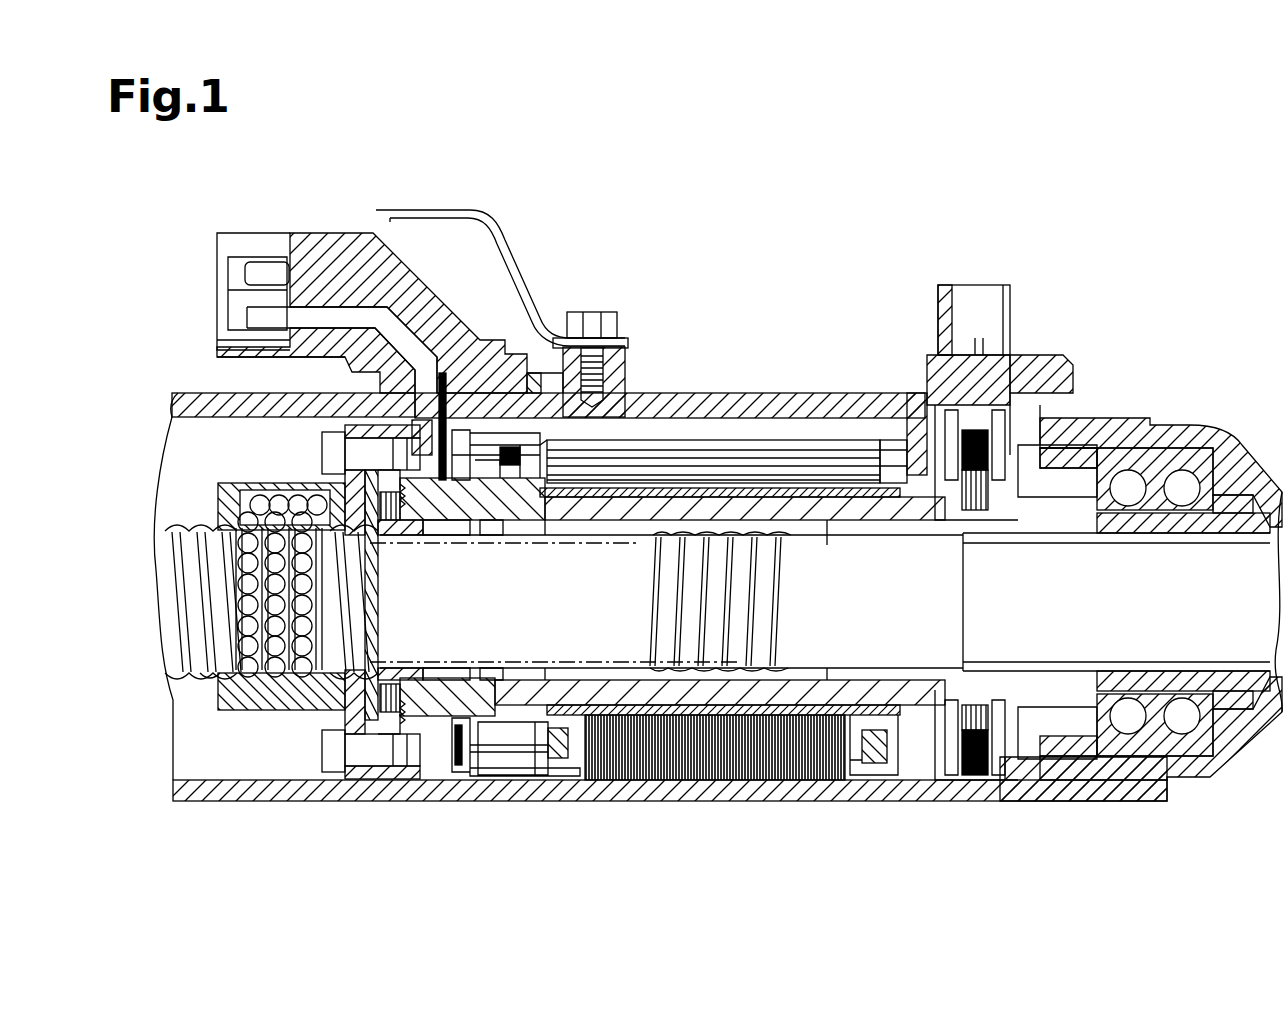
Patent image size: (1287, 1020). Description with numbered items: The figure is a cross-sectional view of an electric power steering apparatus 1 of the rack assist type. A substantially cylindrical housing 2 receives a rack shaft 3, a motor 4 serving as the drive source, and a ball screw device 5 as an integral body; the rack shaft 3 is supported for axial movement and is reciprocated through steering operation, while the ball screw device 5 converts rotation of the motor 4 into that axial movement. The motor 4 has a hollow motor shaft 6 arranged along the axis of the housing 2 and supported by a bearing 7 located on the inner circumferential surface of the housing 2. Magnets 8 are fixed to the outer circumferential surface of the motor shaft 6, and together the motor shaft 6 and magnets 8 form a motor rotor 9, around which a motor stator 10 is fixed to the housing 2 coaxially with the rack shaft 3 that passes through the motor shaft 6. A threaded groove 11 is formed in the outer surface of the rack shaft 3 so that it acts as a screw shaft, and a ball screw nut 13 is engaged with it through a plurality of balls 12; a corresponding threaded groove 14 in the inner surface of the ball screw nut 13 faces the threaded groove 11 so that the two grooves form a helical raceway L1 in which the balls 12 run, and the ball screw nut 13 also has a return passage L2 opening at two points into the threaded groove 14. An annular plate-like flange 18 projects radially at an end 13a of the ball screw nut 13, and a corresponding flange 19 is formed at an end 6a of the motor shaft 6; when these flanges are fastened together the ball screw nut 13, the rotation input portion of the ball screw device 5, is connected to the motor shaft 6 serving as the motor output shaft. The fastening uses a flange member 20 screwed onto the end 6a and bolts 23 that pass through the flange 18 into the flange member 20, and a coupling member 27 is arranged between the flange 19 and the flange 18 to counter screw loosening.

The electric power steering apparatus 1 is at (1140, 206).
The housing 2 is at (830, 394).
The rack shaft 3 is at (928, 617).
The motor 4 is at (878, 782).
The ball screw device 5 is at (186, 459).
The motor shaft 6 is at (547, 520).
The end of the motor shaft 6a is at (420, 520).
The bearing 7 is at (1152, 543).
The magnets 8 is at (606, 500).
The motor rotor 9 is at (784, 601).
The motor stator 10 is at (750, 430).
The threaded groove 11 is at (214, 536).
The balls 12 is at (303, 634).
The ball screw nut 13 is at (232, 716).
The end of the ball screw nut 13a is at (380, 666).
The threaded groove 14 is at (216, 674).
The flange 18 is at (358, 779).
The flange 19 is at (410, 779).
The flange member 20 is at (431, 655).
The bolts 23 is at (320, 460).
The coupling member 27 is at (418, 667).
The helical raceway L1 is at (262, 702).
The return passage L2 is at (248, 500).